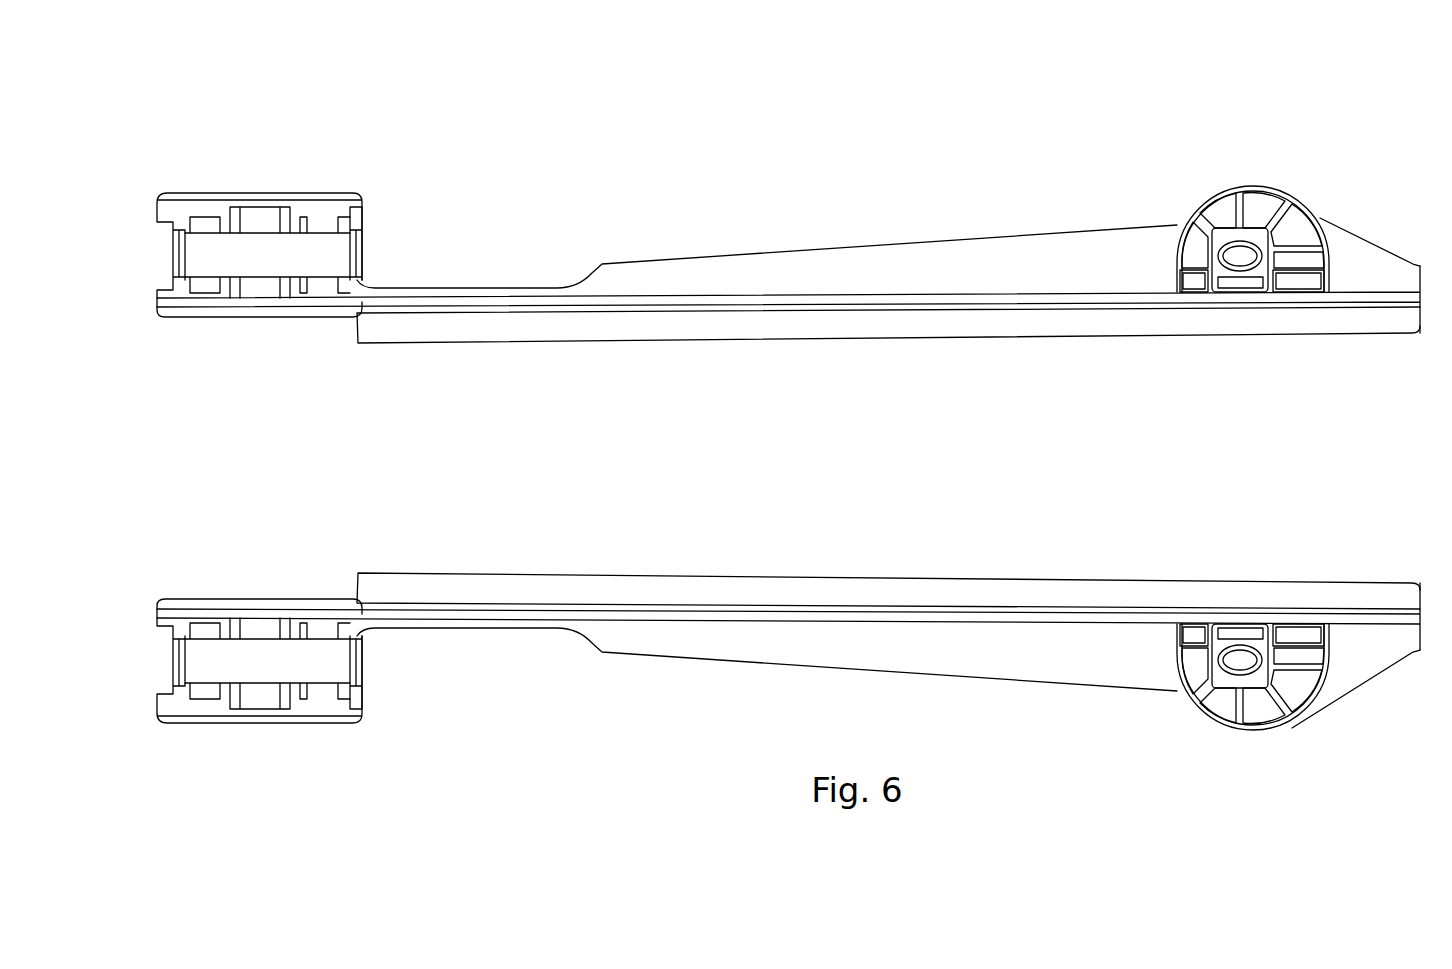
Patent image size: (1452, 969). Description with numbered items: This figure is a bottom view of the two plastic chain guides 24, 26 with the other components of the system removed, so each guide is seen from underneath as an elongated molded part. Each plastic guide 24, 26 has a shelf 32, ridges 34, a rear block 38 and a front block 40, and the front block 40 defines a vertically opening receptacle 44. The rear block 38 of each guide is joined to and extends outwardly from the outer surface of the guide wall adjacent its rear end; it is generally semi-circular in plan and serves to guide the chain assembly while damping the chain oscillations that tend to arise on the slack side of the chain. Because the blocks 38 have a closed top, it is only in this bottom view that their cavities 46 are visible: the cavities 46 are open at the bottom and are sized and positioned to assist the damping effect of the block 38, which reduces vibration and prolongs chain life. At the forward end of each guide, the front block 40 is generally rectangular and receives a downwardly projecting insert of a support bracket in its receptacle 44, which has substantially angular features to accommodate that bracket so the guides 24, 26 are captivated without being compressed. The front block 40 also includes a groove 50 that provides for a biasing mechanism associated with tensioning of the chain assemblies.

The plastic guide 24 is at (603, 680).
The plastic guide 26 is at (645, 228).
The shelf 32 is at (703, 335).
The ridges 34 is at (765, 270).
The rear block 38 is at (1240, 185).
The front block 40 is at (320, 293).
The receptacle 44 is at (273, 257).
The cavities 46 is at (1165, 283).
The groove 50 is at (357, 252).